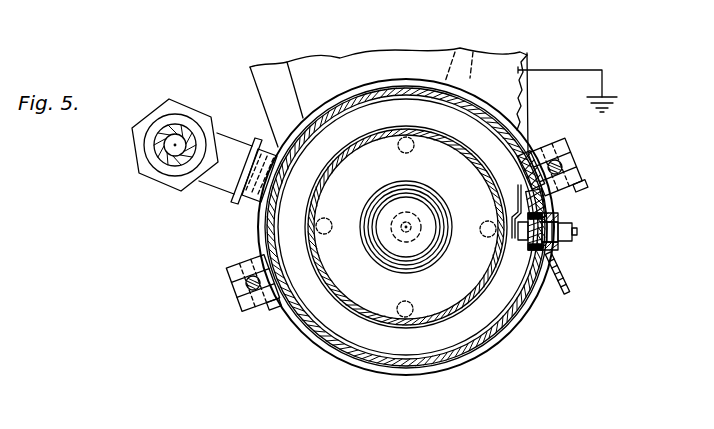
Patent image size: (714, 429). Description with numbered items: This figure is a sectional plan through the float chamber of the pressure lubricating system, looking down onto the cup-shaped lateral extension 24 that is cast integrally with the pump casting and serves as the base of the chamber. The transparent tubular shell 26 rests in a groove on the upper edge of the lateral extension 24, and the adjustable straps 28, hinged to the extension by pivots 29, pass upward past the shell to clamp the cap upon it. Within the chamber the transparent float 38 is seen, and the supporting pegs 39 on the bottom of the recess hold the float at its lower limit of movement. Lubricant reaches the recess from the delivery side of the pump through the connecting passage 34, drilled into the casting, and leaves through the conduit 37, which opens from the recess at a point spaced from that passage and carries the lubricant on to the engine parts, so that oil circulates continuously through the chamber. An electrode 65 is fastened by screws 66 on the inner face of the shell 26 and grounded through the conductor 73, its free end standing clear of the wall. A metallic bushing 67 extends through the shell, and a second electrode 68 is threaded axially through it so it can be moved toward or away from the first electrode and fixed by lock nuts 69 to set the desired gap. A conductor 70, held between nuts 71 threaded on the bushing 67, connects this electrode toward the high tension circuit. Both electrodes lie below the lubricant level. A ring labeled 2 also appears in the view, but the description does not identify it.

The bearing ring 2 is at (320, 172).
The lateral extension 24 is at (262, 92).
The tubular shell 26 is at (336, 356).
The adjustable straps 28 is at (570, 162).
The pivots 29 is at (575, 188).
The connecting passage 34 is at (480, 48).
The conduit 37 is at (168, 163).
The float 38 is at (407, 330).
The supporting pegs 39 is at (414, 151).
The electrode 65 is at (515, 215).
The screws 66 is at (530, 150).
The metallic bushing 67 is at (560, 214).
The electrode 68 is at (577, 232).
The lock nuts 69 is at (560, 246).
The conductor 70 is at (568, 288).
The nuts 71 is at (556, 247).
The conductor 73 is at (567, 100).